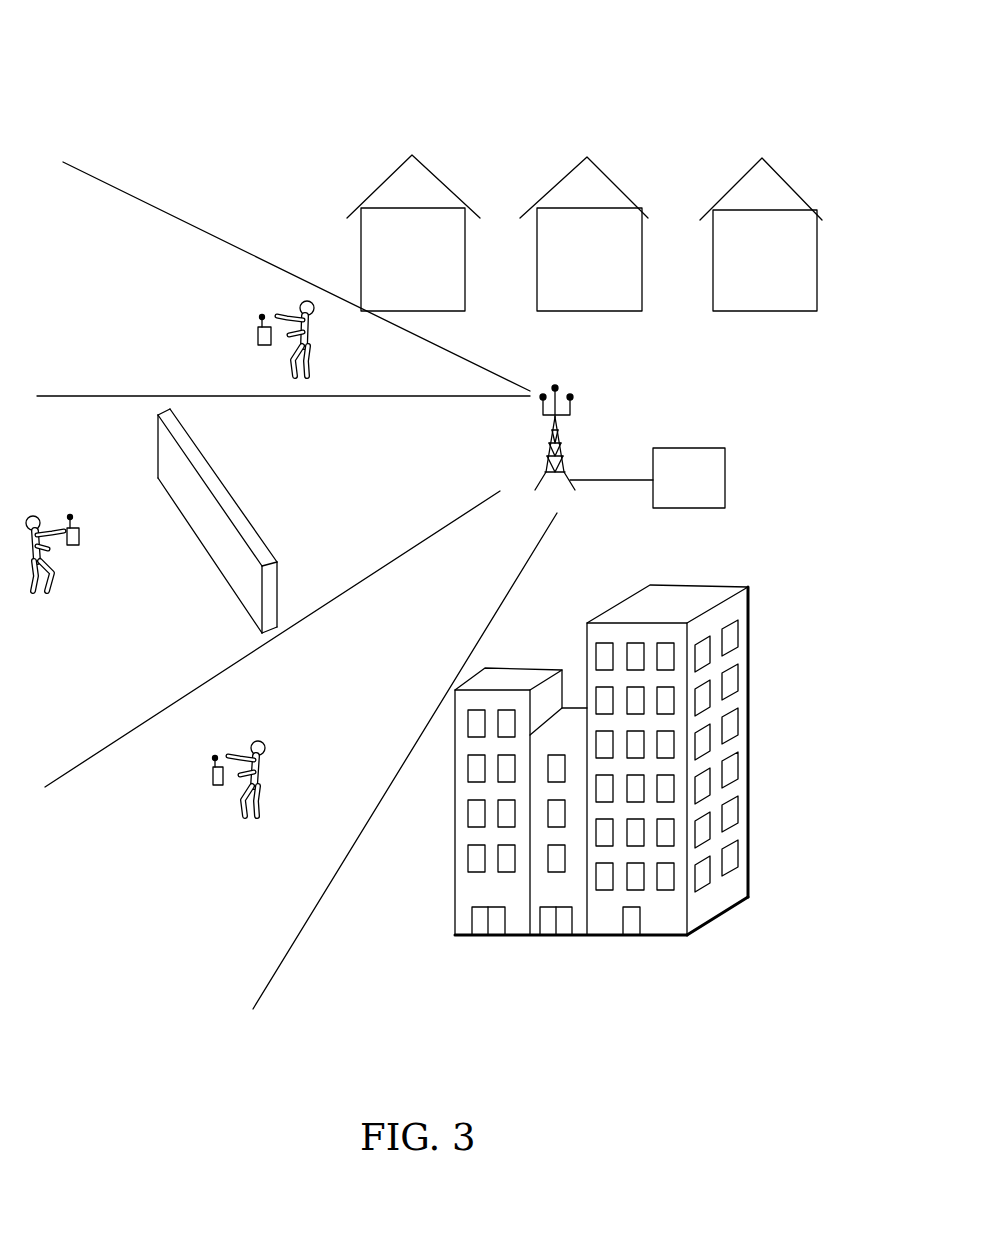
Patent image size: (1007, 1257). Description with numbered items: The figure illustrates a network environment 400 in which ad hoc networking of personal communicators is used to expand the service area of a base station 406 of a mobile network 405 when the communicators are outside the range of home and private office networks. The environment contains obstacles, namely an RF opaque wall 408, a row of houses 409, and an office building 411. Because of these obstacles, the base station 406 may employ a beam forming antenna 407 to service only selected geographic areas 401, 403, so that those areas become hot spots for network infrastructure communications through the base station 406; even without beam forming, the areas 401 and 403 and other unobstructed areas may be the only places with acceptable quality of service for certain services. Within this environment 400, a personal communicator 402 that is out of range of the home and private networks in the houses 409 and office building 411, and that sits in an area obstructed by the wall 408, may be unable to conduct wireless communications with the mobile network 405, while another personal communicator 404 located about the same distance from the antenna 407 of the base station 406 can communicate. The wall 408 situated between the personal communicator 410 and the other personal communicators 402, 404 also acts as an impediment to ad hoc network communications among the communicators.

The network environment 400 is at (162, 42).
The selected geographic area 401 is at (120, 298).
The personal communicator 402 is at (79, 535).
The selected geographic area 403 is at (192, 888).
The personal communicator 404 is at (213, 780).
The mobile network 405 is at (725, 483).
The base station 406 is at (568, 465).
The beam forming antenna 407 is at (570, 403).
The RF opaque wall 408 is at (223, 482).
The houses 409 is at (427, 173).
The personal communicator 410 is at (258, 337).
The office buildings 411 is at (745, 750).